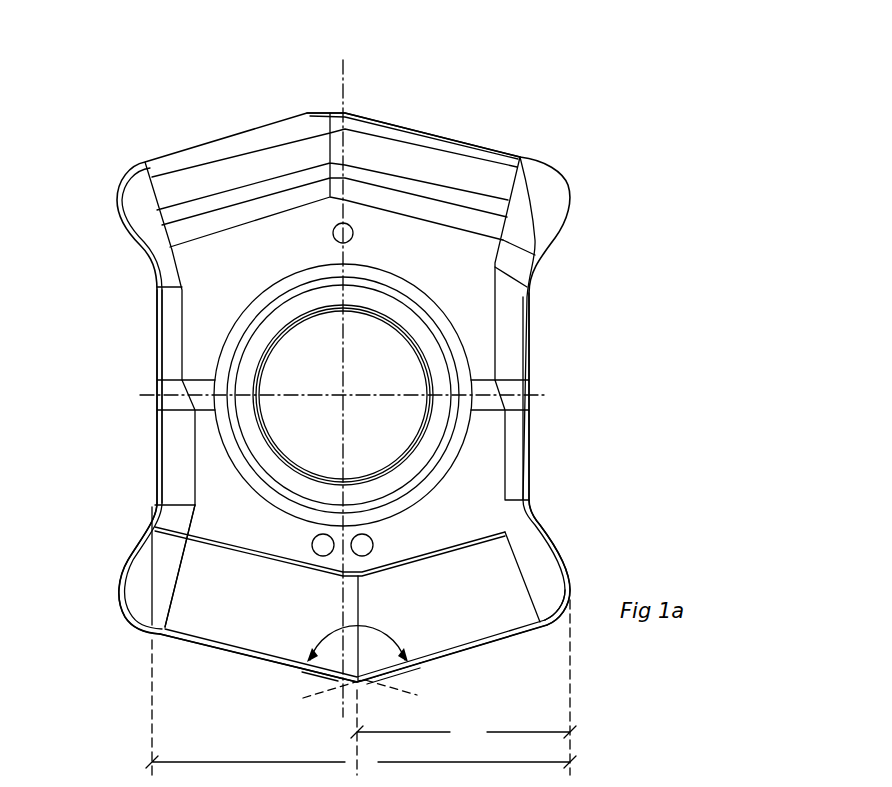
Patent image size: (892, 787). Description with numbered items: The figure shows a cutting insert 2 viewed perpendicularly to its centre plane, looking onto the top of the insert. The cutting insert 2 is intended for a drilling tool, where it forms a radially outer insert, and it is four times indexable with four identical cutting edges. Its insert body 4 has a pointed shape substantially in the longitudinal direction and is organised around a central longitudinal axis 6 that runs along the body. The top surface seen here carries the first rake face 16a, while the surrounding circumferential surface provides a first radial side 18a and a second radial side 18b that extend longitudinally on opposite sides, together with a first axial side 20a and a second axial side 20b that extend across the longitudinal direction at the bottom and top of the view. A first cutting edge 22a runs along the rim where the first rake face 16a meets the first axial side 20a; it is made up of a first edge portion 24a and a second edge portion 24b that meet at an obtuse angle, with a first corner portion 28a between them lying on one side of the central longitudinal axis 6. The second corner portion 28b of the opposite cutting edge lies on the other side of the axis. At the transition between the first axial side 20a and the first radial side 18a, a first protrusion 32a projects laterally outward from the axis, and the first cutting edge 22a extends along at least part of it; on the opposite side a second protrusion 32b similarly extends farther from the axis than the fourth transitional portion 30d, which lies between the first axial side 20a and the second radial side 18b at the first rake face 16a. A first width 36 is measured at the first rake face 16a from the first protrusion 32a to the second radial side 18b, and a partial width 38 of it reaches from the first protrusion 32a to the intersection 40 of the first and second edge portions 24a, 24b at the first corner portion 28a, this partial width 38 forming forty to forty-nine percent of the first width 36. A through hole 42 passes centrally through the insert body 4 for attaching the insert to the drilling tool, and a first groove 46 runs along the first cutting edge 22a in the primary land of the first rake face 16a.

The cutting insert 2 is at (573, 103).
The insert body 4 is at (222, 170).
The central longitudinal axis 6 is at (345, 97).
The first rake face 16a is at (490, 518).
The first radial side 18a is at (551, 359).
The second radial side 18b is at (122, 359).
The first axial side 20a is at (281, 708).
The second axial side 20b is at (459, 116).
The first cutting edge 22a is at (570, 600).
The first edge portion 24a is at (490, 659).
The second edge portion 24b is at (221, 659).
The first corner portion 28a is at (360, 678).
The second corner portion 28b is at (340, 674).
The fourth transitional portion 30d is at (190, 599).
The first protrusion 32a is at (545, 585).
The second protrusion 32b is at (135, 587).
The first width 36 is at (361, 687).
The partial width 38 is at (463, 733).
The intersection 40 is at (358, 680).
The through hole 42 is at (390, 368).
The first groove 46 is at (300, 623).